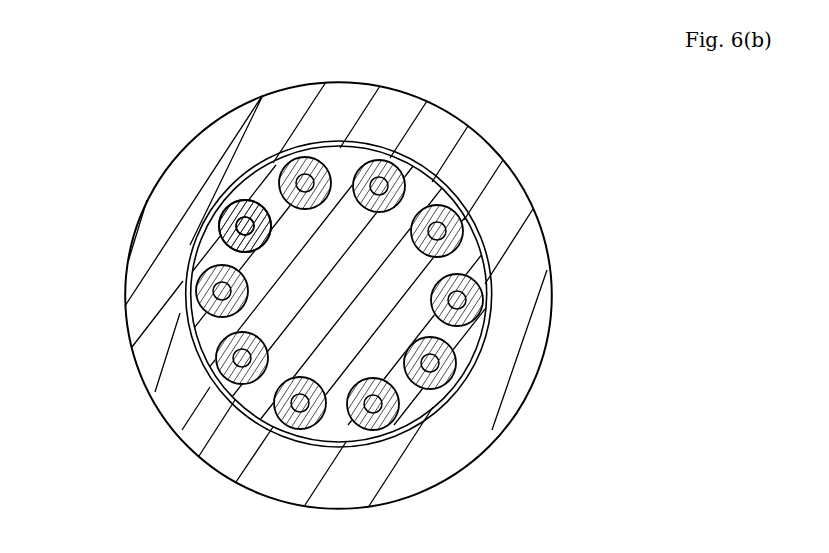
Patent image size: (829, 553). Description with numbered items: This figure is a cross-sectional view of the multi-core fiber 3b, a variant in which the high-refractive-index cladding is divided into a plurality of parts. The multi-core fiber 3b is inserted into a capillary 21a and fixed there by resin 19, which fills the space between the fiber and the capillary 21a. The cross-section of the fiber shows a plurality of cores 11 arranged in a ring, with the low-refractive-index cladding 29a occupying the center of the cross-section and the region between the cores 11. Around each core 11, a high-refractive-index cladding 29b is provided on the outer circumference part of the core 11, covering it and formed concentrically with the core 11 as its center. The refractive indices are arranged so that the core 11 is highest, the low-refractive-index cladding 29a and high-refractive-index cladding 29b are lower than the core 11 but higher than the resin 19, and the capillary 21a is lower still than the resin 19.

The resin 19 is at (185, 282).
The capillary 21a is at (505, 195).
The multi-core fiber 3b is at (477, 333).
The low-refractive-index cladding 29a is at (242, 402).
The high-refractive-index cladding 29b is at (232, 216).
The core 11 is at (450, 356).